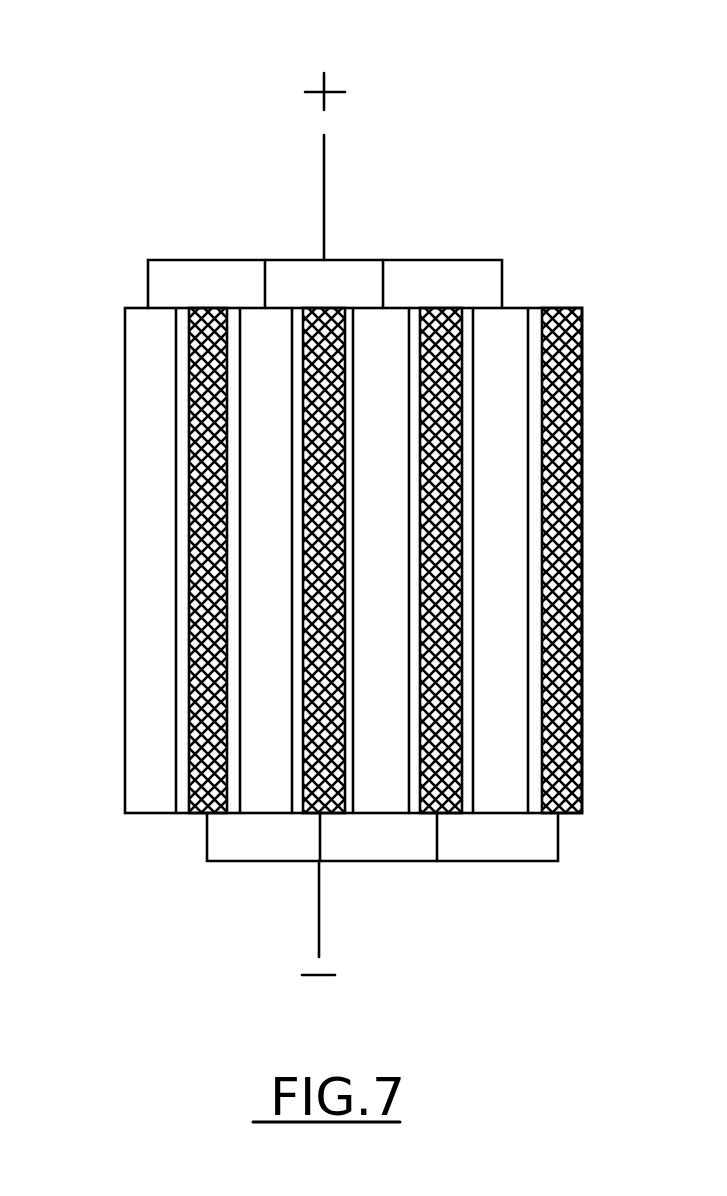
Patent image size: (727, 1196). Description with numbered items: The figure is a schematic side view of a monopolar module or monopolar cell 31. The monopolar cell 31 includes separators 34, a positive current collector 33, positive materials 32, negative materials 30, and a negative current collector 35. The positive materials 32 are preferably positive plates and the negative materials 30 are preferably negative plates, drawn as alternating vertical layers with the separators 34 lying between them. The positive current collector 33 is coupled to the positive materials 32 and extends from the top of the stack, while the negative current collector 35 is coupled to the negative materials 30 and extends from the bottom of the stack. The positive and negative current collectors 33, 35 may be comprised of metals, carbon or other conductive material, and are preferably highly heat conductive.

The negative materials 30 is at (200, 306).
The monopolar cell 31 is at (578, 56).
The positive materials 32 is at (137, 330).
The positive current collector 33 is at (325, 165).
The separators 34 is at (236, 317).
The negative current collector 35 is at (319, 925).